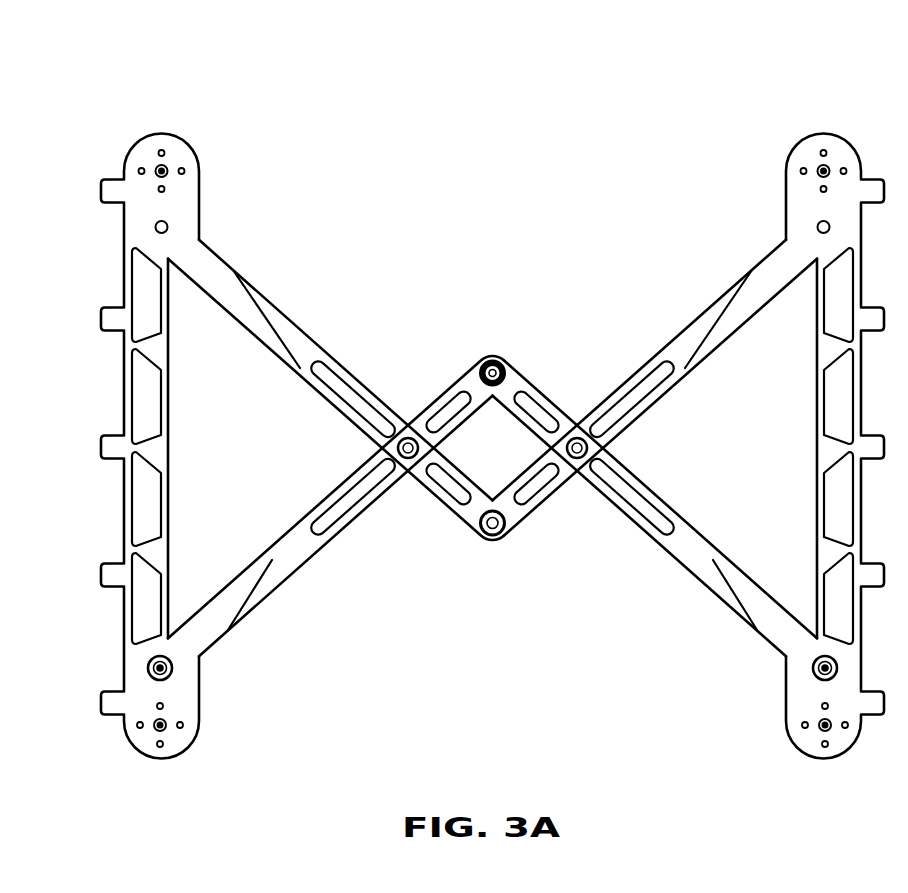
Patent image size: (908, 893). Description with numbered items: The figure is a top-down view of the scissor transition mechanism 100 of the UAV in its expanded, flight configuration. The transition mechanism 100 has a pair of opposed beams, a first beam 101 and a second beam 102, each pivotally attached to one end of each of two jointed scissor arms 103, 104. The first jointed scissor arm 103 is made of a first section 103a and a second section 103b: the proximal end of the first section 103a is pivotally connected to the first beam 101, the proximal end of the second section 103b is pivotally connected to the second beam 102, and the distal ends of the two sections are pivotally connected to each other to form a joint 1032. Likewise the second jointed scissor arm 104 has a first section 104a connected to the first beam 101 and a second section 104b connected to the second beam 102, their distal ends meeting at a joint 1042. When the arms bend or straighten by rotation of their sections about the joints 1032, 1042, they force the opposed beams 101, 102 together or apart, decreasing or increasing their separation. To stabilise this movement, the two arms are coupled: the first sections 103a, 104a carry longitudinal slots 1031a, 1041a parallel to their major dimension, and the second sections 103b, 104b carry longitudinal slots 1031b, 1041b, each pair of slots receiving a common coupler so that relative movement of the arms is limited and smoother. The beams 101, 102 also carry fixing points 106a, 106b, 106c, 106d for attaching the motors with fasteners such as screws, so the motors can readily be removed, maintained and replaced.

The transition mechanism 100 is at (414, 131).
The first beam 101 is at (161, 133).
The second beam 102 is at (827, 133).
The first jointed scissor arm 103 is at (336, 369).
The first section of first jointed scissor arm 103a is at (264, 322).
The second section of first jointed scissor arm 103b is at (655, 380).
The second jointed scissor arm 104 is at (336, 543).
The first section of second jointed scissor arm 104a is at (278, 568).
The second section of second jointed scissor arm 104b is at (655, 521).
The longitudinal slot 1031a is at (346, 401).
The longitudinal slot 1031b is at (646, 389).
The longitudinal slot 1041a is at (369, 484).
The longitudinal slot 1041b is at (656, 511).
The joint 1042 is at (489, 364).
The joint 1032 is at (496, 528).
The fixing point 106a is at (166, 168).
The fixing point 106b is at (820, 171).
The fixing point 106c is at (163, 729).
The fixing point 106d is at (827, 730).